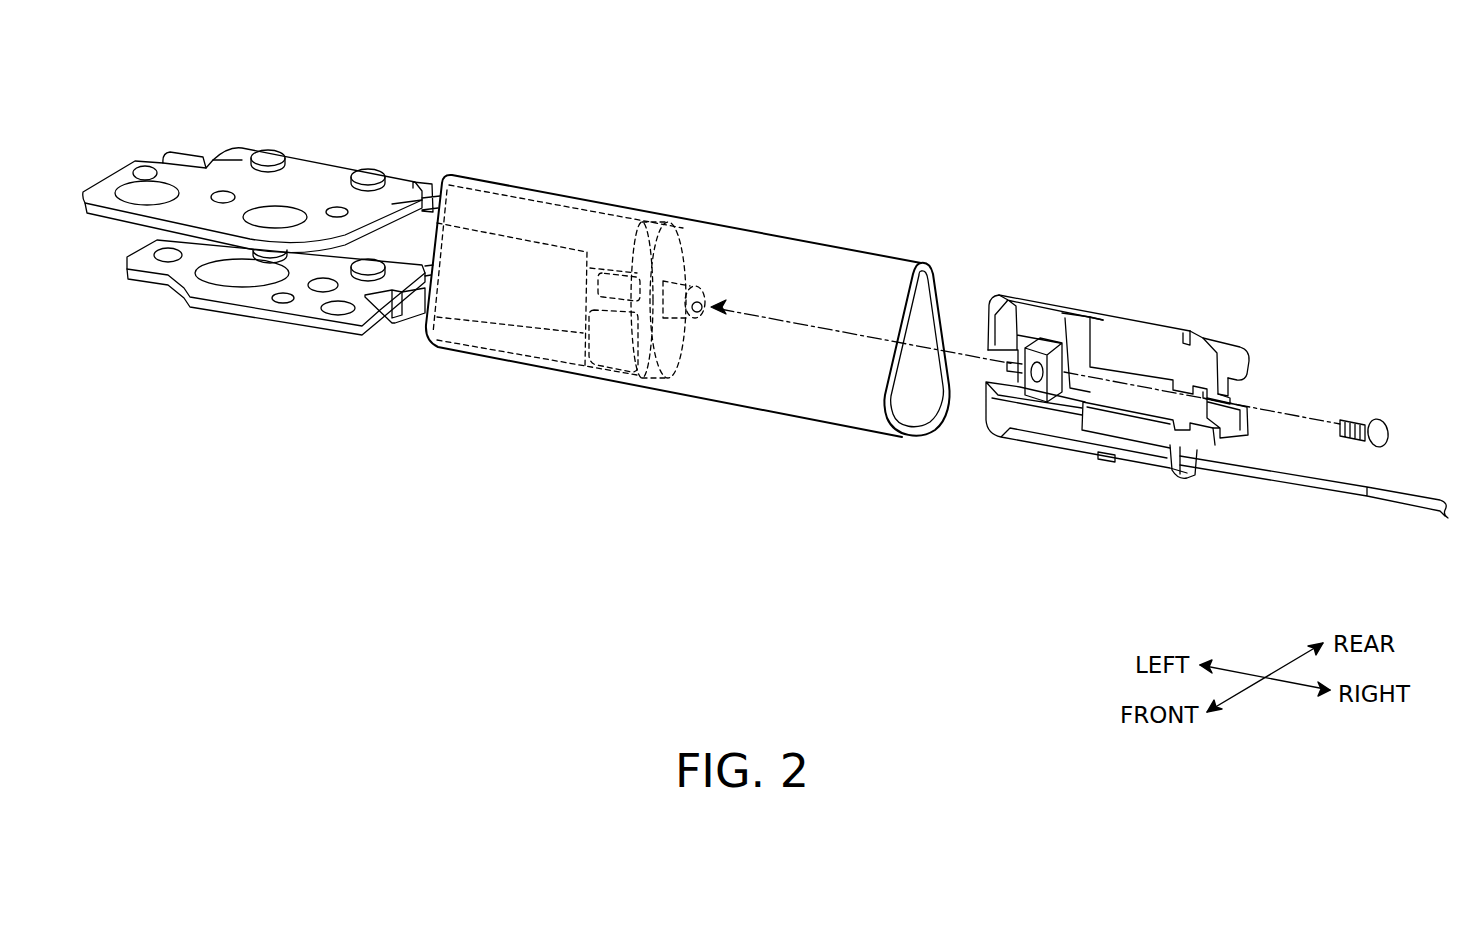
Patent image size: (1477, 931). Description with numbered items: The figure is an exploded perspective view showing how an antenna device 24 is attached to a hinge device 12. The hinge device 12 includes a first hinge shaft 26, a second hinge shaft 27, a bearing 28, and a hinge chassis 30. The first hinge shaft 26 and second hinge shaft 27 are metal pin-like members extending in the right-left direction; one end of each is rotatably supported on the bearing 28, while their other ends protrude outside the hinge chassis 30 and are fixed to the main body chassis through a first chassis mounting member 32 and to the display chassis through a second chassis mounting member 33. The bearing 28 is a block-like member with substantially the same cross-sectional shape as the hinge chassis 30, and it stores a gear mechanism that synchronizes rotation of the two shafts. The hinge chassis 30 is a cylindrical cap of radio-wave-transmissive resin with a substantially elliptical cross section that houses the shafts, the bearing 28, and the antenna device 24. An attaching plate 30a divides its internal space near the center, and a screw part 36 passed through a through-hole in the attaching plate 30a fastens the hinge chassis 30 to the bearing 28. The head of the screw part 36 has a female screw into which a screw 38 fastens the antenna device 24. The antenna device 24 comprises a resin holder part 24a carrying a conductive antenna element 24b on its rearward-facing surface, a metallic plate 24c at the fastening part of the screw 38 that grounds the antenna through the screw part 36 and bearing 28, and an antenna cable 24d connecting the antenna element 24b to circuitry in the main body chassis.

The hinge device 12 is at (741, 102).
The antenna device 24 is at (1123, 277).
The holder part 24a is at (1143, 323).
The antenna element 24b is at (1077, 352).
The metallic plate 24c is at (1058, 333).
The antenna cable 24d is at (1322, 486).
The first hinge shaft 26 is at (410, 297).
The second hinge shaft 27 is at (418, 214).
The bearing 28 is at (528, 280).
The hinge chassis 30 is at (768, 230).
The attaching plate 30a is at (672, 350).
The first chassis mounting member 32 is at (262, 315).
The second chassis mounting member 33 is at (191, 194).
The screw part 36 is at (712, 310).
The screw 38 is at (1392, 433).